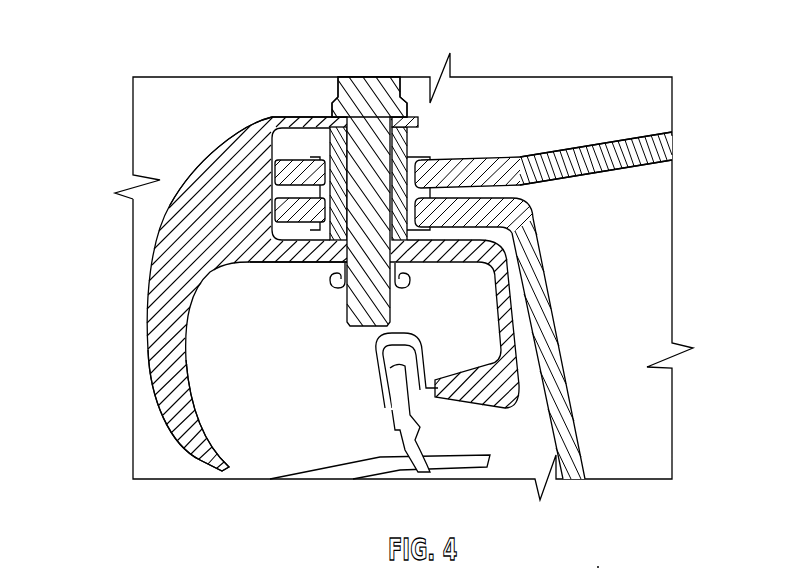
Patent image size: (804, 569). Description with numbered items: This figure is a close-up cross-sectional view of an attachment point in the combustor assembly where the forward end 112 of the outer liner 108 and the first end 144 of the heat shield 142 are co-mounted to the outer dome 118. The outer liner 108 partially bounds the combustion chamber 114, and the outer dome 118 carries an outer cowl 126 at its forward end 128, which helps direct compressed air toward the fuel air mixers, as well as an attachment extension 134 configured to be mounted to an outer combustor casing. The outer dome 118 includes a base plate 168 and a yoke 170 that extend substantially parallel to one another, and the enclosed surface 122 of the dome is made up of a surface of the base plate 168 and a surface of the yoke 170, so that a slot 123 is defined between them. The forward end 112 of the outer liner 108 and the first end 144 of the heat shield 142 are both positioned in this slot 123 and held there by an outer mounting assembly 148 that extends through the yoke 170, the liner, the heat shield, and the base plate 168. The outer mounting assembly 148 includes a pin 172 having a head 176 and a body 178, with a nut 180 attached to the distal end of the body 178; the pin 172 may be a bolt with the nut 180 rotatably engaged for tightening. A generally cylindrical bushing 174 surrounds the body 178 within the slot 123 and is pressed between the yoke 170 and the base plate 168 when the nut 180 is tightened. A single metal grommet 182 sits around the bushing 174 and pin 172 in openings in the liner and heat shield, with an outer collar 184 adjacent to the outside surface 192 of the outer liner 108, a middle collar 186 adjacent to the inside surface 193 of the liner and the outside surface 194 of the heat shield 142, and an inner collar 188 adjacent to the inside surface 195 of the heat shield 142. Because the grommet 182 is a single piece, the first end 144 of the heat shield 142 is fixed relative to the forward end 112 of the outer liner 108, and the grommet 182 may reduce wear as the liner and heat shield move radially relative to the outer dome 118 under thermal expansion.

The outer liner 108 is at (654, 131).
The forward end 112 is at (300, 150).
The combustion chamber 114 is at (653, 311).
The outer dome 118 is at (190, 204).
The enclosed surface 122 is at (176, 188).
The slot 123 is at (441, 150).
The outer cowl 126 is at (158, 343).
The forward end 128 is at (130, 281).
The attachment extension 134 is at (300, 232).
The heat shield 142 is at (549, 320).
The first end 144 is at (540, 219).
The outer mounting assembly 148 is at (433, 103).
The base plate 168 is at (303, 245).
The yoke 170 is at (331, 128).
The pin 172 is at (415, 94).
The bushing 174 is at (426, 139).
The head 176 is at (375, 117).
The body 178 is at (343, 289).
The nut 180 is at (395, 298).
The metal grommet 182 is at (415, 178).
The outer collar 184 is at (325, 185).
The middle collar 186 is at (305, 249).
The inner collar 188 is at (420, 229).
The outside surface 192 is at (512, 153).
The inside surface 193 is at (580, 182).
The outside surface 194 is at (541, 154).
The inside surface 195 is at (478, 232).